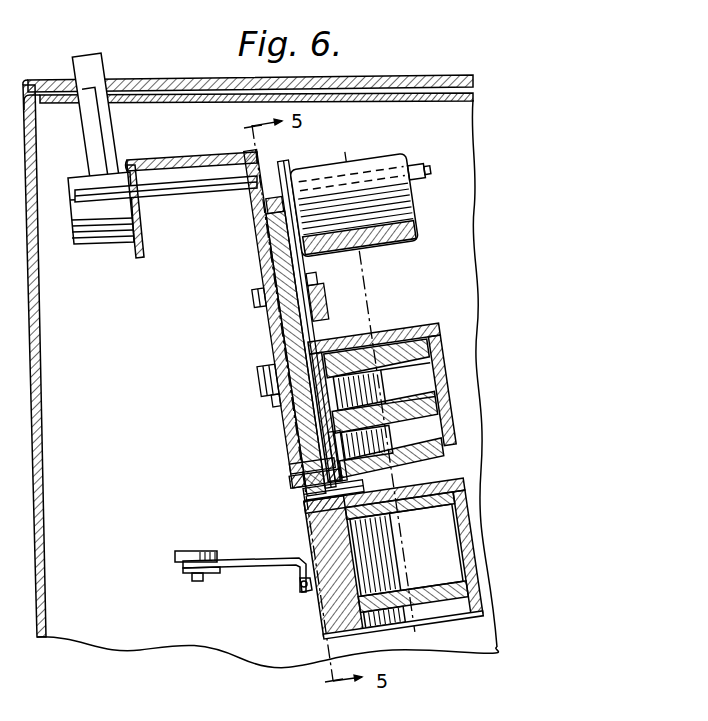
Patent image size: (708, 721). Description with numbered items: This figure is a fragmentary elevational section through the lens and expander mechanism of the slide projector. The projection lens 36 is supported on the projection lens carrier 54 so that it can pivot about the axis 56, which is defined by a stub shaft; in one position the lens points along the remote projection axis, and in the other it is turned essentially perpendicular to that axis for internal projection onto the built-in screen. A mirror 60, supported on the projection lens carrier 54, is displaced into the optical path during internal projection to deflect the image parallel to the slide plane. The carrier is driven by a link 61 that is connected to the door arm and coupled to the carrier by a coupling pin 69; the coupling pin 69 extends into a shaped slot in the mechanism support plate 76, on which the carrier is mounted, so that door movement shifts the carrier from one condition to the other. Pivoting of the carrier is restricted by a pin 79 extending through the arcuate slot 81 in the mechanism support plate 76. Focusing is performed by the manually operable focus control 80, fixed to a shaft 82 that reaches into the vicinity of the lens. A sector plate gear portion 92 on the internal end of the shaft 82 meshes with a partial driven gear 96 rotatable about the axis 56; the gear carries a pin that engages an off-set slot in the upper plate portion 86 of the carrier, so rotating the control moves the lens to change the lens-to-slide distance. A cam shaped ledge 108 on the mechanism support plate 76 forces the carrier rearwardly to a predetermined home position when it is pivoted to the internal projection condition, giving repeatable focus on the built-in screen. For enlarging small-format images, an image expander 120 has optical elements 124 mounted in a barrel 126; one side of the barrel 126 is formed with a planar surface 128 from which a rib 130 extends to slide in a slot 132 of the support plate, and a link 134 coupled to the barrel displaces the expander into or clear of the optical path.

The projection lens 36 is at (449, 355).
The projection lens carrier 54 is at (268, 331).
The axis 56 is at (260, 299).
The mirror 60 is at (375, 240).
The link 61 is at (272, 394).
The coupling pin 69 is at (258, 372).
The mechanism support plate 76 is at (284, 428).
The pin 79 is at (284, 468).
The focus control 80 is at (86, 58).
The arcuate slot 81 is at (290, 480).
The shaft 82 is at (190, 200).
The upper plate portion 86 is at (300, 258).
The sector plate gear portion 92 is at (257, 244).
The partial driven gear 96 is at (316, 321).
The cam shaped ledge 108 is at (312, 498).
The image expander 120 is at (480, 539).
The optical elements 124 is at (428, 504).
The barrel 126 is at (315, 523).
The planar surface 128 is at (318, 632).
The rib 130 is at (310, 599).
The slot 132 is at (315, 551).
The link 134 is at (196, 586).